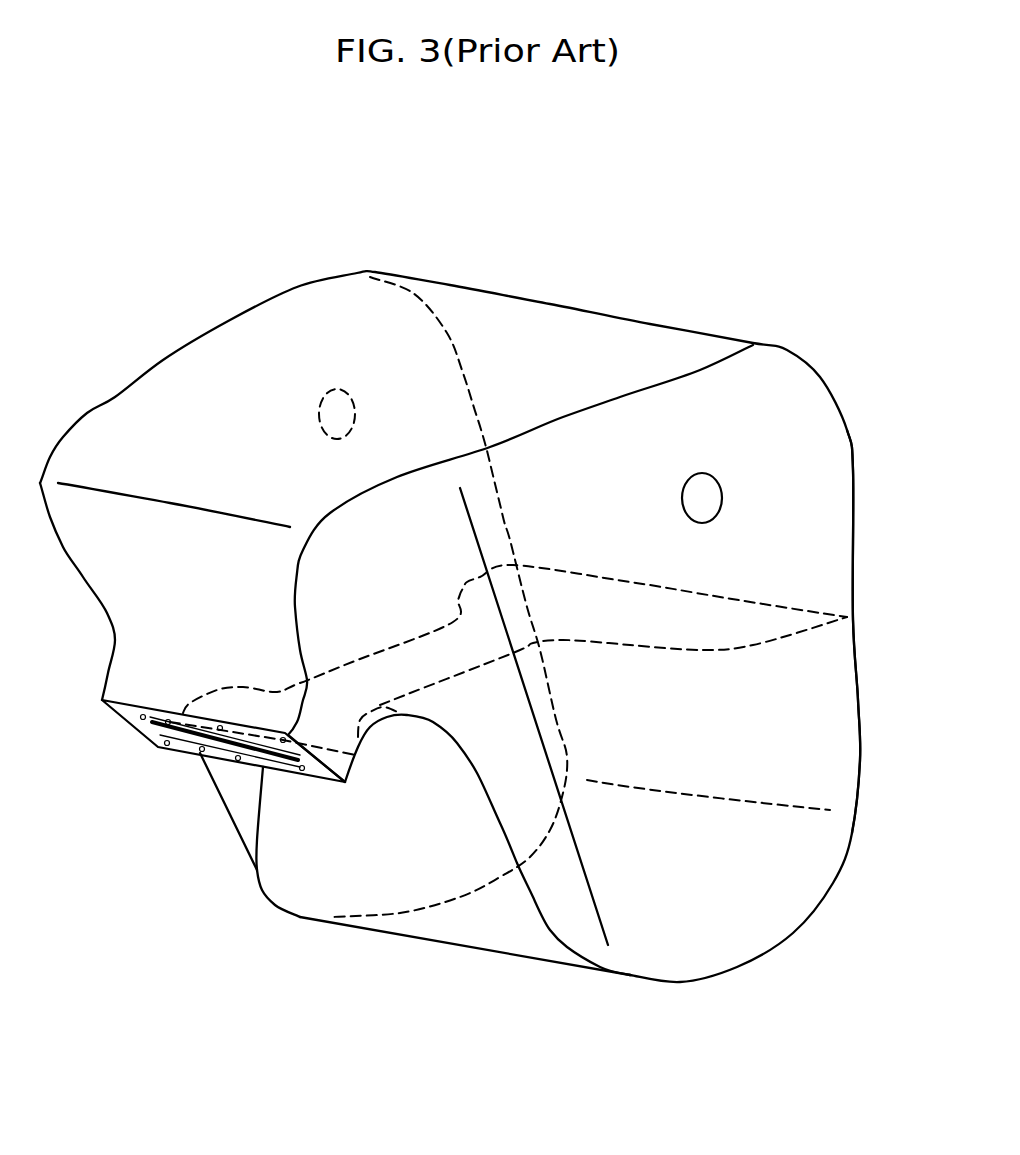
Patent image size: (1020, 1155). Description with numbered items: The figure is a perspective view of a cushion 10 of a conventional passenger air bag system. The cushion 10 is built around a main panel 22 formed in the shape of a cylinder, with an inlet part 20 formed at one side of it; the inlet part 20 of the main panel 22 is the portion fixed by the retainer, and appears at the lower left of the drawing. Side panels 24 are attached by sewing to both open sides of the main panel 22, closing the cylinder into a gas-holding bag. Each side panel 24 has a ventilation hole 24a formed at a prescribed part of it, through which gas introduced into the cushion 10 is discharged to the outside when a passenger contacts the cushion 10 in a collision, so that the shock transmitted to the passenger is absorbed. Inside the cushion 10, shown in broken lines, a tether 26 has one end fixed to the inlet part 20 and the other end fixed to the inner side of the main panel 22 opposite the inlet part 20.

The cushion 10 is at (596, 282).
The inlet part 20 is at (152, 735).
The main panel 22 is at (143, 438).
The side panel 24 is at (837, 750).
The ventilation hole 24a is at (707, 498).
The tether 26 is at (753, 613).